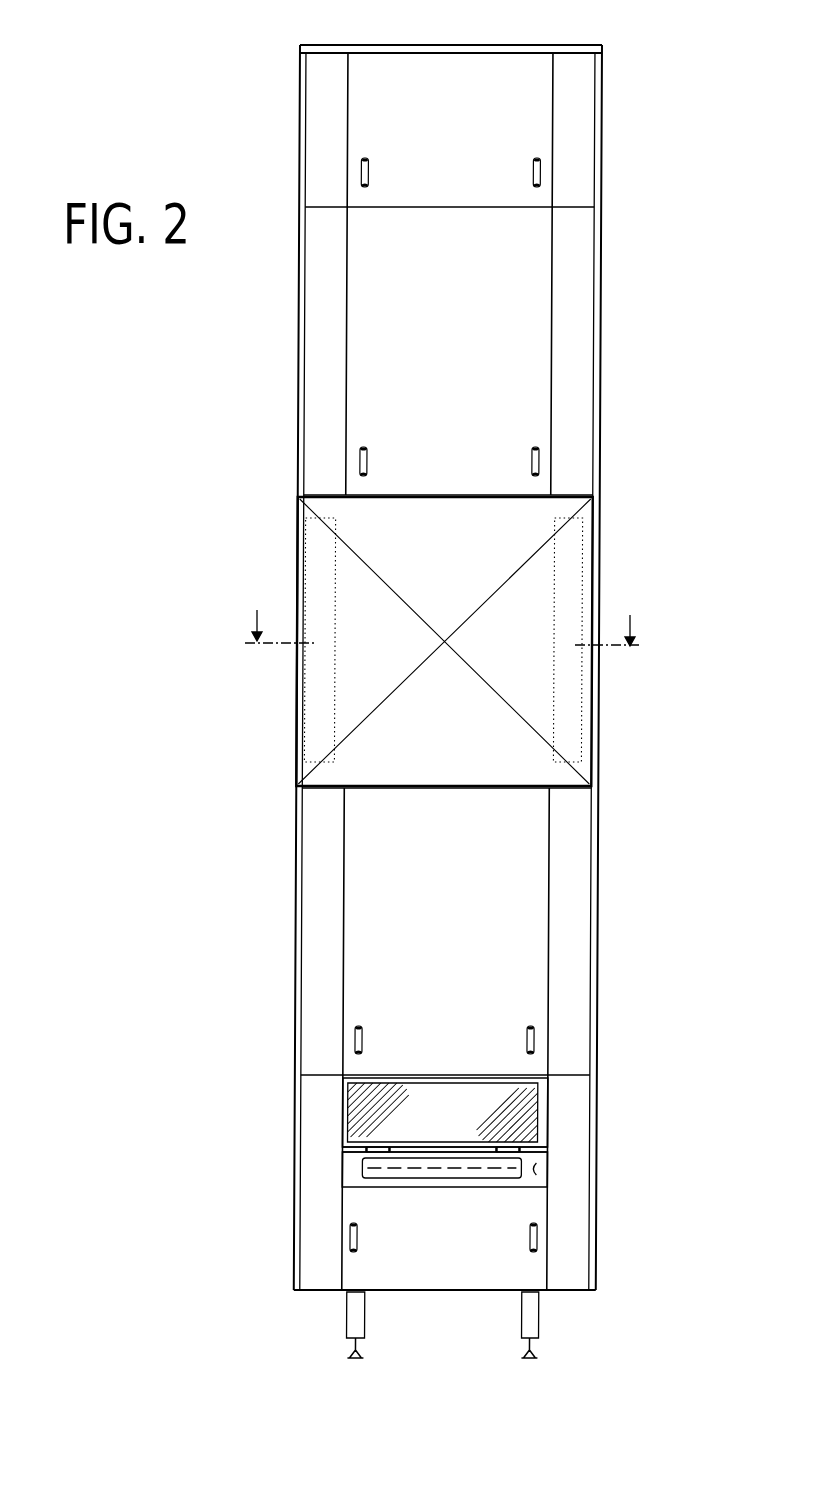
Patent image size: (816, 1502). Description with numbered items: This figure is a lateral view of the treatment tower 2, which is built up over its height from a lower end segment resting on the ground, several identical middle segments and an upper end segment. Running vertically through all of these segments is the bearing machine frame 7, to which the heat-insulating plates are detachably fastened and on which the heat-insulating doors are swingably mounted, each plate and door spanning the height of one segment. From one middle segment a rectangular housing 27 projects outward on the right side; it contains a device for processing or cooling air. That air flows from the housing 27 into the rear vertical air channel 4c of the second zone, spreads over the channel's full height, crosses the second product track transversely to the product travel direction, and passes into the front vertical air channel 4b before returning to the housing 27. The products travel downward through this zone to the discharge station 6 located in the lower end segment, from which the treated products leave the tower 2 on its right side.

The tower 2 is at (618, 38).
The front air channel of the second zone 4b is at (312, 247).
The rear air channel of the second zone 4c is at (587, 270).
The right housing 27 is at (572, 497).
The discharge station 6 is at (355, 1163).
The bearing machine frame 7 is at (539, 1318).